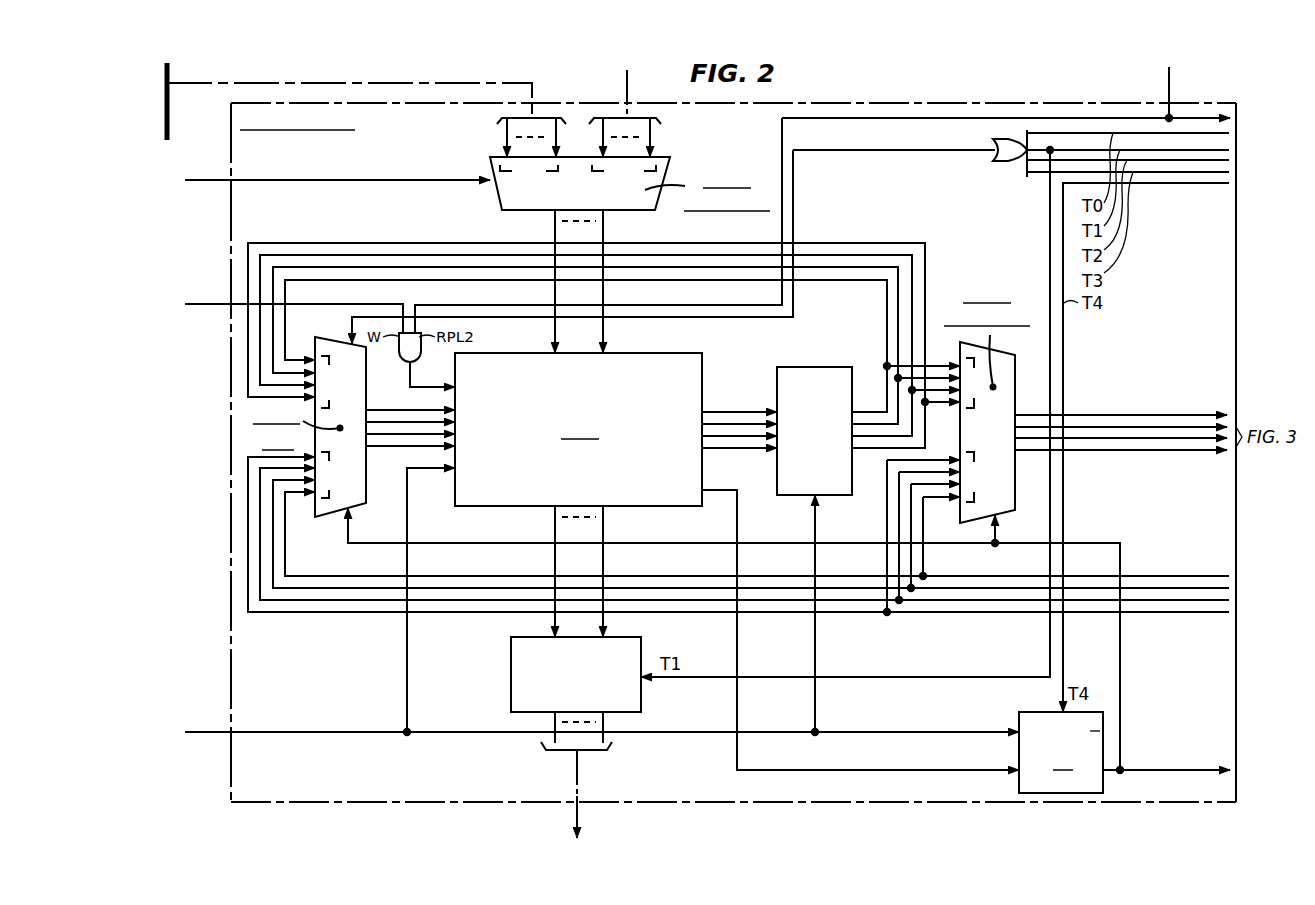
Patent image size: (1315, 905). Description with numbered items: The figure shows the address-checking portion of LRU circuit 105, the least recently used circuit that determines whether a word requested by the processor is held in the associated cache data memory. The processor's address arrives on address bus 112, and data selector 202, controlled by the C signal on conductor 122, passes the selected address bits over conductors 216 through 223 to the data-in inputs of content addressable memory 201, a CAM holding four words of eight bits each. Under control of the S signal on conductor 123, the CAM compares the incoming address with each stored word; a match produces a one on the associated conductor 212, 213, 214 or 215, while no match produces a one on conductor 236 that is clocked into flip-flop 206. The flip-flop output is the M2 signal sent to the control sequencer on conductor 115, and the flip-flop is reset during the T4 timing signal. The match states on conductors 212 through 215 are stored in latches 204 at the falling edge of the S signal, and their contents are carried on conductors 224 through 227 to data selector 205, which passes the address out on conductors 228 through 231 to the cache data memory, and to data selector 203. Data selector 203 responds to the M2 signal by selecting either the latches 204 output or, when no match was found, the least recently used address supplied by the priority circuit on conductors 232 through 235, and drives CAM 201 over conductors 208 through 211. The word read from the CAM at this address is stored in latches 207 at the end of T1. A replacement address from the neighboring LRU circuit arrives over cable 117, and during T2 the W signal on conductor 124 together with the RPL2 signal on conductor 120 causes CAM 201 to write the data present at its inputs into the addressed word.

The LRU circuit 105 is at (232, 108).
The address bus 112 is at (169, 99).
The conductor 115 is at (1196, 777).
The cable 117 is at (626, 76).
The conductor 120 is at (1168, 78).
The conductor 122 is at (205, 184).
The conductor 123 is at (205, 736).
The conductor 124 is at (205, 308).
The content addressable memory 201 is at (626, 353).
The data selector 202 is at (662, 165).
The data selector 203 is at (332, 345).
The latches 204 is at (810, 366).
The data selector 205 is at (1000, 358).
The flip-flop 206 is at (1020, 712).
The latches 207 is at (638, 645).
The conductor 208 is at (428, 396).
The conductor 209 is at (430, 436).
The conductor 210 is at (430, 436).
The conductor 211 is at (440, 426).
The conductor 212 is at (748, 412).
The conductor 213 is at (744, 424).
The conductor 214 is at (740, 436).
The conductor 215 is at (748, 450).
The conductor 216 is at (554, 229).
The conductor 223 is at (604, 229).
The conductor 224 is at (882, 360).
The conductor 225 is at (876, 386).
The conductor 226 is at (858, 499).
The conductor 227 is at (861, 520).
The conductor 228 is at (1184, 414).
The conductor 229 is at (1172, 426).
The conductor 230 is at (1182, 440).
The conductor 231 is at (1188, 452).
The conductor 232 is at (1180, 600).
The conductor 233 is at (1178, 612).
The conductor 234 is at (1176, 588).
The conductor 235 is at (1178, 565).
The conductor 236 is at (953, 756).